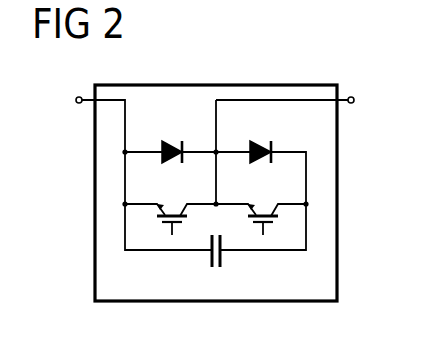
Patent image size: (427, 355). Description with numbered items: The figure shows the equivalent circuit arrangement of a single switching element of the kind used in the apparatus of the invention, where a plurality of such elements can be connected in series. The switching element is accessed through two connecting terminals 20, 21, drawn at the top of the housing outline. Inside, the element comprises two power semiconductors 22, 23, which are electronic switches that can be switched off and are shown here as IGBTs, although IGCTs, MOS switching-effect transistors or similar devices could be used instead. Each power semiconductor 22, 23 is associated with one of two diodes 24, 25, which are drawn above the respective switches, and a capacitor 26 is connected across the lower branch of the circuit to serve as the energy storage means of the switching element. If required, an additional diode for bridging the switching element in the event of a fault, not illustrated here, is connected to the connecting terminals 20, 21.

The connecting terminal 20 is at (77, 104).
The connecting terminal 21 is at (352, 104).
The power semiconductor 22 is at (153, 218).
The power semiconductor 23 is at (280, 220).
The diode 24 is at (167, 140).
The diode 25 is at (255, 140).
The capacitor 26 is at (223, 262).